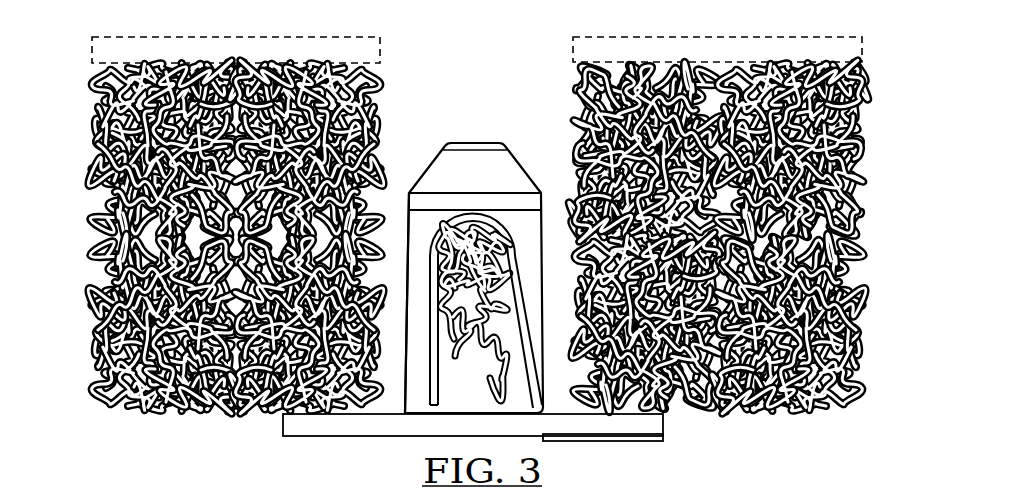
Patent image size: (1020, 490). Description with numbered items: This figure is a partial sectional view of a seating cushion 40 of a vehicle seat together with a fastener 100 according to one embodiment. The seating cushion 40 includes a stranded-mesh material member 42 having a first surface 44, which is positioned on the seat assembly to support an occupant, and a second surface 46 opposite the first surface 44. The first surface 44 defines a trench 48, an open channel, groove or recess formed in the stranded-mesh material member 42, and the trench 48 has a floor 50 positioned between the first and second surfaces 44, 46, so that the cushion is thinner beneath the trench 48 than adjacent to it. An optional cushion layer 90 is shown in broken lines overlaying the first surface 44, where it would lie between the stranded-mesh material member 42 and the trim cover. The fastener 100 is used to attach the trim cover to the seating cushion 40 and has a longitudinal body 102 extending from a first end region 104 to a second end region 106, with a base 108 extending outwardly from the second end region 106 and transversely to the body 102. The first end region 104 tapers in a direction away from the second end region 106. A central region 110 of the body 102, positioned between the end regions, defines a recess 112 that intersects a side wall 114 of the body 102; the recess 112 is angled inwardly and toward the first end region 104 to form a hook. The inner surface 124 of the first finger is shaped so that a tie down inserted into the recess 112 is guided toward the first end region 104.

The seating cushion 40 is at (207, 236).
The stranded-mesh material member 42 is at (183, 156).
The first surface 44 is at (732, 228).
The second surface 46 is at (732, 62).
The trench 48 is at (545, 131).
The floor 50 is at (392, 232).
The cushion layer 90 is at (118, 45).
The fastener 100 is at (484, 222).
The longitudinal body 102 is at (489, 141).
The first end region 104 is at (437, 143).
The second end region 106 is at (398, 402).
The base 108 is at (643, 425).
The central region 110 is at (411, 307).
The recess 112 is at (498, 284).
The side wall 114 is at (420, 270).
The inner surface 124 is at (512, 257).